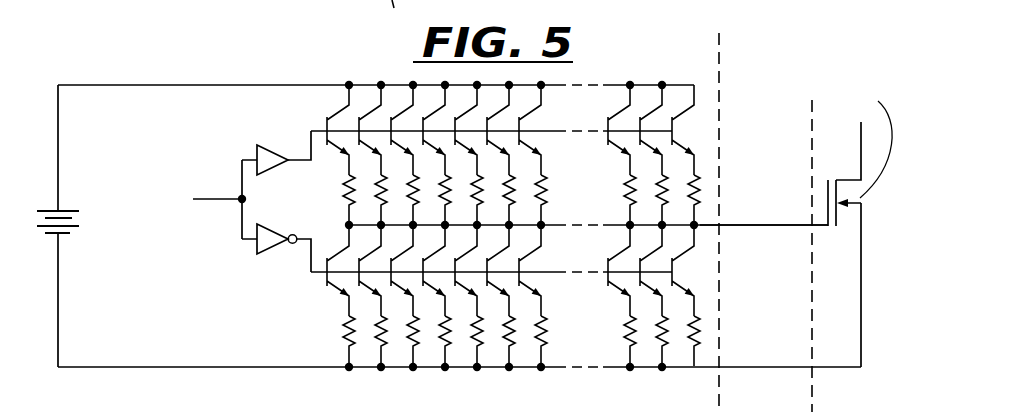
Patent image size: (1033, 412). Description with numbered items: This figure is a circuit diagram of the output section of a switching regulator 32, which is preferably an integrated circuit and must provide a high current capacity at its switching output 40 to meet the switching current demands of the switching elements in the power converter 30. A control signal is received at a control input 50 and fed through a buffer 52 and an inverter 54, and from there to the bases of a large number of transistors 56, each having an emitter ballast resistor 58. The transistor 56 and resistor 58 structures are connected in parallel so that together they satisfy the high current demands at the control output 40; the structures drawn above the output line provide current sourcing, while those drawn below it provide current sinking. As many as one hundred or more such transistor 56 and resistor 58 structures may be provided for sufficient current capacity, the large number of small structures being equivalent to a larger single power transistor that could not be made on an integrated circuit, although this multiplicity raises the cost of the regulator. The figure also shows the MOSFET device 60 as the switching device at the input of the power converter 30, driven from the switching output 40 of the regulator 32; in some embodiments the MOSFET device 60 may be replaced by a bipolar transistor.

The power converter 30 is at (810, 308).
The switching regulator 32 is at (722, 67).
The switching output 40 is at (720, 227).
The control input 50 is at (205, 200).
The buffer 52 is at (262, 147).
The inverter 54 is at (265, 255).
The transistor 56 is at (327, 118).
The emitter ballast resistor 58 is at (345, 180).
The MOSFET device 60 is at (863, 214).